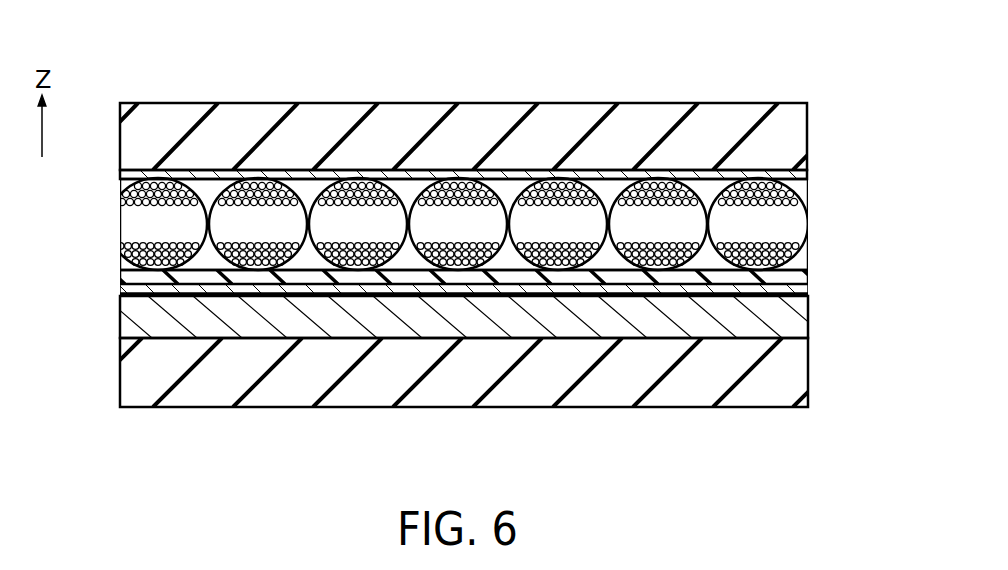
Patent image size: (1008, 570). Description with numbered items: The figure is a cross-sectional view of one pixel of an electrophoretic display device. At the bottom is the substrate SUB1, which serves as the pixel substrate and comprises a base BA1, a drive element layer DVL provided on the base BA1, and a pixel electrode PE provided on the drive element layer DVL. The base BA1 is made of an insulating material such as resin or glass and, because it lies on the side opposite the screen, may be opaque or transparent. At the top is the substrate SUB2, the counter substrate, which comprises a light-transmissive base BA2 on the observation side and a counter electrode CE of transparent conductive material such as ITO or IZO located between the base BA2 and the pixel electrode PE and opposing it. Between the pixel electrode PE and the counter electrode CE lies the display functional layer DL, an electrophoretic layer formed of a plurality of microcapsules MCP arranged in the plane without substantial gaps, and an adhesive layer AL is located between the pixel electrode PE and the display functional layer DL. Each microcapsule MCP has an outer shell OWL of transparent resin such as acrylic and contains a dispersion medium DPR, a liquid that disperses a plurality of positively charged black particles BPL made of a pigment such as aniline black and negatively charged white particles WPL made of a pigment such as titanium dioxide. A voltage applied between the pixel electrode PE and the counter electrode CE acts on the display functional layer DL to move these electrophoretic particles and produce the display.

The substrate SUB2 is at (469, 98).
The base BA2 is at (800, 138).
The counter electrode CE is at (806, 176).
The microcapsule MCP is at (307, 190).
The white particles WPL is at (457, 193).
The dispersion medium DPR is at (120, 224).
The black particles BPL is at (458, 254).
The outer shell OWL is at (464, 277).
The adhesive layer AL is at (469, 288).
The pixel electrode PE is at (806, 290).
The drive element layer DVL is at (800, 316).
The base BA1 is at (800, 380).
The substrate SUB1 is at (470, 390).
The display functional layer DL is at (461, 185).